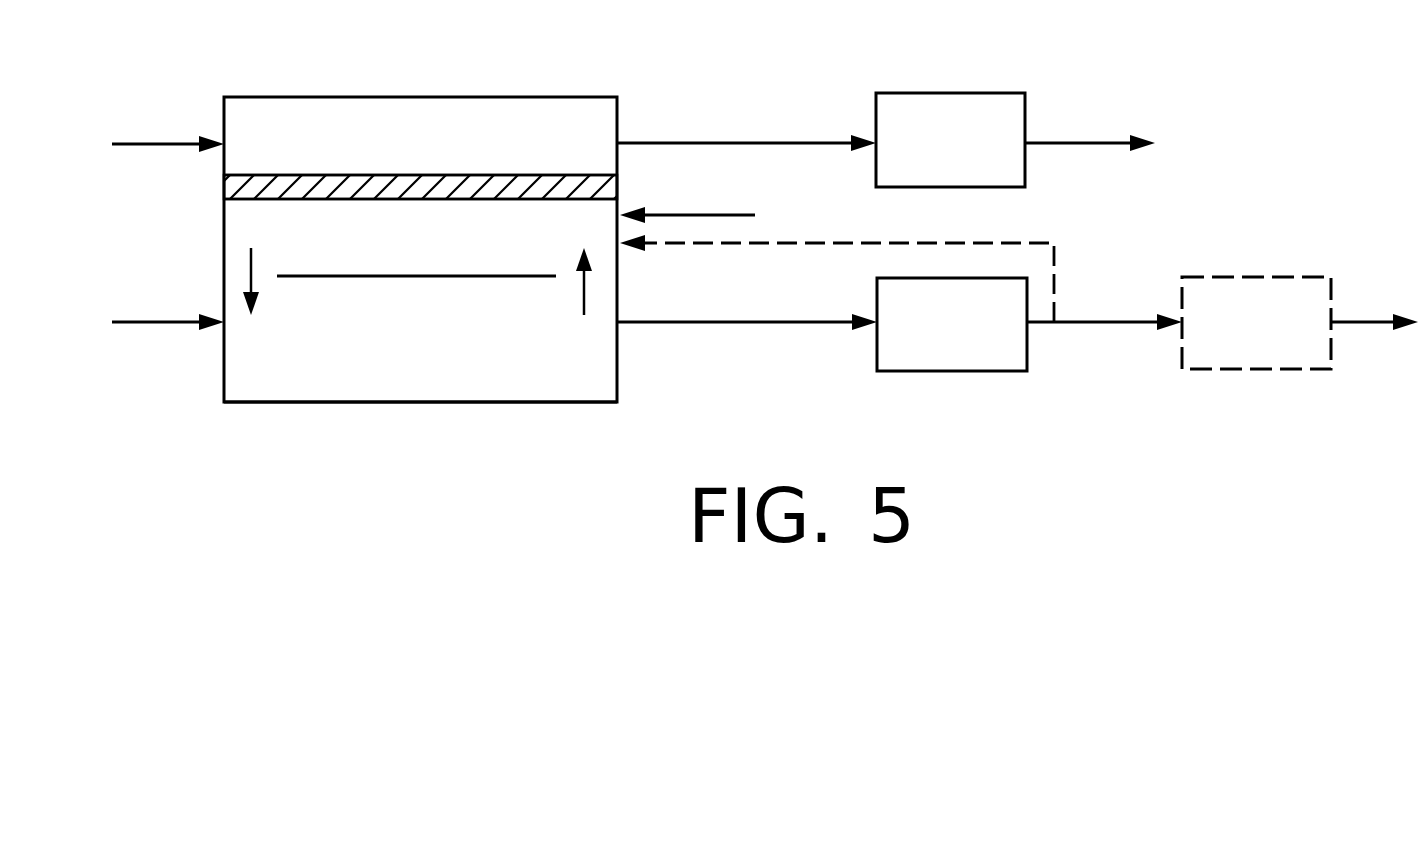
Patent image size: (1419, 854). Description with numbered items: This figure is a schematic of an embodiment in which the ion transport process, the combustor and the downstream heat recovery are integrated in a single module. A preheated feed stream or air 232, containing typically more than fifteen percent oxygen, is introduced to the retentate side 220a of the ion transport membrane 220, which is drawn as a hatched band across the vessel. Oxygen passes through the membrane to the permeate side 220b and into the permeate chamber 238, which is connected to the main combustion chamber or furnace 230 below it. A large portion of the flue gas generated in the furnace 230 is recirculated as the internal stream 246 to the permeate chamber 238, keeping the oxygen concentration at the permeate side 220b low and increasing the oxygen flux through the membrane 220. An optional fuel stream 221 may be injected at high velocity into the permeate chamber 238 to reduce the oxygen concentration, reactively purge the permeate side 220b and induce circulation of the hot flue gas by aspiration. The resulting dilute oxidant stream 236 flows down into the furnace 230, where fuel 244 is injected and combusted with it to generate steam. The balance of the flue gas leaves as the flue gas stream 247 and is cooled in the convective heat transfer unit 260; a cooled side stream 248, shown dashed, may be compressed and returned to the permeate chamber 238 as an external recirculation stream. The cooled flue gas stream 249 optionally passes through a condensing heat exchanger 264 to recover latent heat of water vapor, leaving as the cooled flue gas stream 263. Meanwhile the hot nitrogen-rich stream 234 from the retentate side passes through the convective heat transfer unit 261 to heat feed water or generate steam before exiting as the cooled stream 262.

The ion transport membrane 220 is at (225, 186).
The retentate side 220a is at (472, 175).
The permeate side 220b is at (398, 202).
The fuel stream 221 is at (665, 213).
The main combustion chamber or furnace 230 is at (447, 356).
The feed stream or air 232 is at (160, 141).
The hot nitrogen-rich stream 234 is at (708, 142).
The oxidant stream 236 is at (252, 275).
The permeate chamber 238 is at (446, 258).
The fuel 244 is at (153, 324).
The internal recirculation stream 246 is at (583, 290).
The flue gas stream 247 is at (760, 323).
The external recirculation stream 248 is at (750, 242).
The flue gas stream 249 is at (1090, 320).
The convective heat transfer unit 260 is at (978, 336).
The convective heat transfer unit 261 is at (975, 156).
The cooled nitrogen-rich stream 262 is at (1062, 141).
The cooled flue gas stream 263 is at (1355, 319).
The condensing heat exchanger 264 is at (1276, 336).